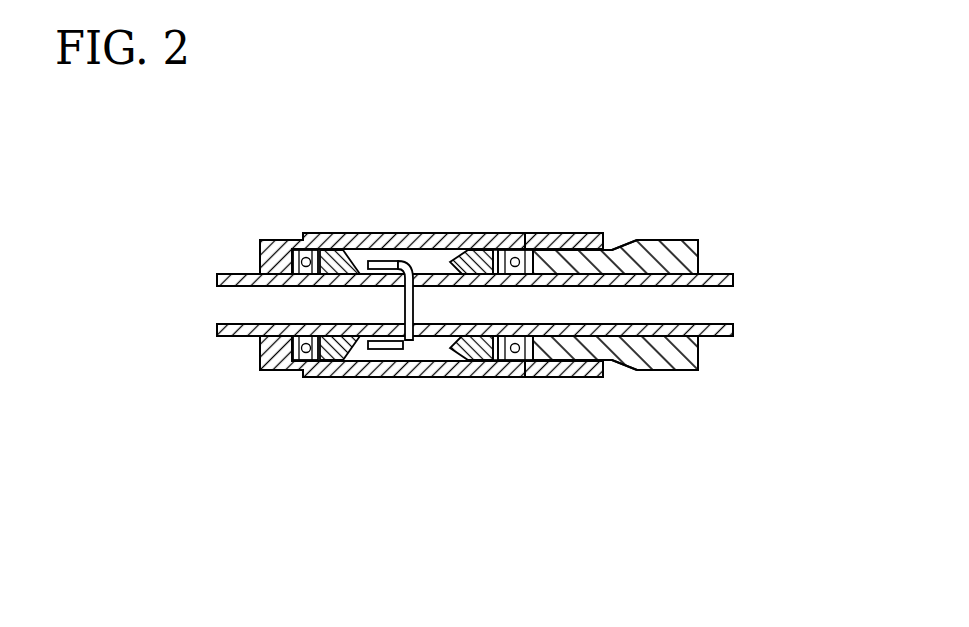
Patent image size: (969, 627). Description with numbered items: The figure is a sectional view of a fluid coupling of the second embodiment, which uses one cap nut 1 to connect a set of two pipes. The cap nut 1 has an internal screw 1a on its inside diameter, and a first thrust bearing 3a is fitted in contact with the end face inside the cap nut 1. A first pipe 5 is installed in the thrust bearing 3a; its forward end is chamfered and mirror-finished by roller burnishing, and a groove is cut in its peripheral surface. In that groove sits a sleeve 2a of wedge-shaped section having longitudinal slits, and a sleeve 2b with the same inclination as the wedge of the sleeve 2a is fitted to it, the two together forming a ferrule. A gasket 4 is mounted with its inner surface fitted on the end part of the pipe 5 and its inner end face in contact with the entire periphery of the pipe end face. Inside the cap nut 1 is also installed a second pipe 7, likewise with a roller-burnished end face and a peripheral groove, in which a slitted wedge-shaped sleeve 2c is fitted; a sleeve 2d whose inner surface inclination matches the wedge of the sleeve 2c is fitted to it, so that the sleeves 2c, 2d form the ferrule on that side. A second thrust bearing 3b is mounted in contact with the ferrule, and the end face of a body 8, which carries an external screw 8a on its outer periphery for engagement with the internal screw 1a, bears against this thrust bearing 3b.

The cap nut 1 is at (362, 234).
The internal screw 1a is at (537, 234).
The sleeve 2a is at (376, 350).
The sleeve 2b is at (336, 345).
The sleeve 2c is at (457, 345).
The sleeve 2d is at (497, 355).
The first thrust bearing 3a is at (303, 345).
The second thrust bearing 3b is at (556, 370).
The gasket 4 is at (411, 342).
The pipe 5 is at (233, 338).
The pipe 7 is at (727, 337).
The body 8 is at (678, 240).
The external screw 8a is at (613, 250).